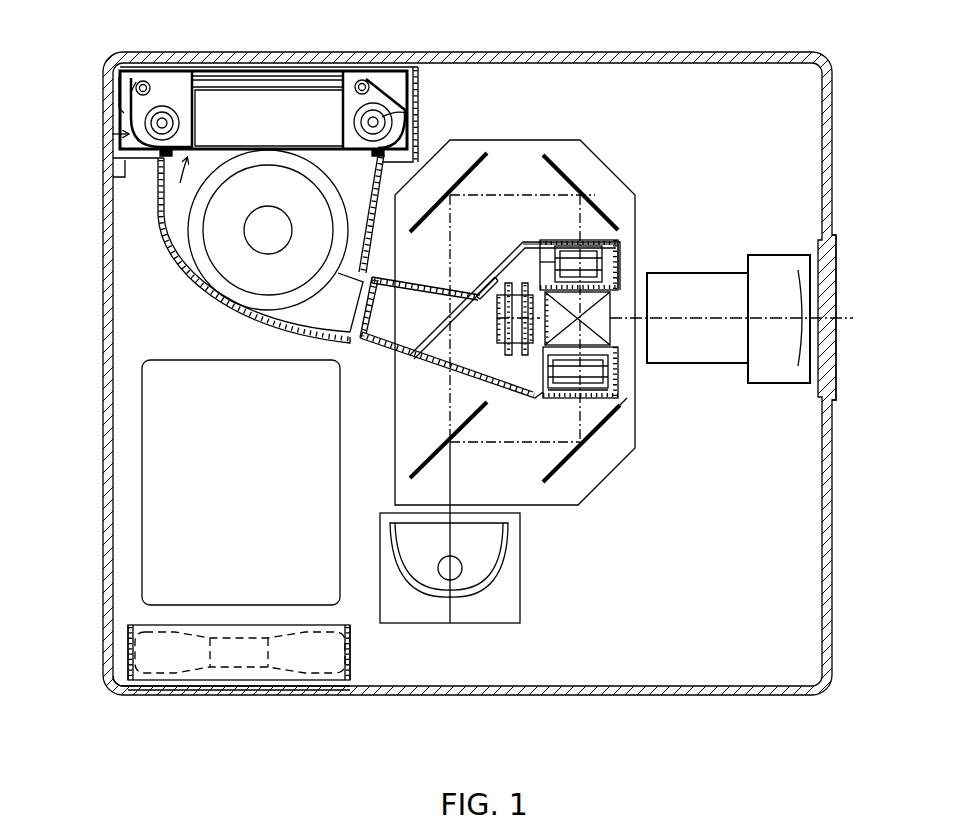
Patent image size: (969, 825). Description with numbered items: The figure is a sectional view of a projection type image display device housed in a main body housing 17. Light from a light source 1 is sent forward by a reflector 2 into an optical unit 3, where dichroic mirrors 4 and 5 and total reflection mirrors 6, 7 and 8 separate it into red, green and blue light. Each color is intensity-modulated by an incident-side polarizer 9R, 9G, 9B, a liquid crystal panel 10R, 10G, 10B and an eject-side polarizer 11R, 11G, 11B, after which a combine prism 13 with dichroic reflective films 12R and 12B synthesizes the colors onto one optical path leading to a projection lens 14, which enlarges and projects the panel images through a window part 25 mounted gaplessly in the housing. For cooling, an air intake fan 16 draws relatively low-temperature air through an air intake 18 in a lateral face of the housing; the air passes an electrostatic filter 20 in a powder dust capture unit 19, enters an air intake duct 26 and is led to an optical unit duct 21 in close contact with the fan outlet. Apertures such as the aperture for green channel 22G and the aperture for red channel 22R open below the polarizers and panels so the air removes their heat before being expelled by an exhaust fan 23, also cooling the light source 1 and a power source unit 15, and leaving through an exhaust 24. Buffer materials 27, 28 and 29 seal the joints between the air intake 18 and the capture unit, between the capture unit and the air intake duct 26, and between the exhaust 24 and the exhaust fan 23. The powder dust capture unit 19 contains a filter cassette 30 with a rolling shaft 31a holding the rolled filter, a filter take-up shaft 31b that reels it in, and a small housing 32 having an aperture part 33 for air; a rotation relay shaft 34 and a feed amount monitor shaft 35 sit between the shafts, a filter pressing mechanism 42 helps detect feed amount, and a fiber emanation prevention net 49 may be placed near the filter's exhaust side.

The light source 1 is at (462, 565).
The reflector 2 is at (495, 590).
The optical unit 3 is at (594, 502).
The dichroic mirror 4 is at (437, 447).
The dichroic mirror 5 is at (420, 338).
The total reflection mirror 6 is at (585, 466).
The total reflection mirror 7 is at (490, 150).
The total reflection mirror 8 is at (545, 152).
The incident-side polarizer 9R is at (612, 228).
The incident-side polarizer 9G is at (518, 356).
The incident-side polarizer 9B is at (621, 408).
The liquid crystal panel 10R is at (560, 246).
The liquid crystal panel 10G is at (484, 283).
The liquid crystal panel 10B is at (605, 392).
The eject-side polarizer 11R is at (540, 262).
The eject-side polarizer 11G is at (505, 290).
The eject-side polarizer 11B is at (546, 396).
The dichroic reflective film 12R is at (615, 350).
The dichroic reflective film 12B is at (625, 290).
The combine prism 13 is at (605, 305).
The projection lens 14 is at (778, 260).
The power source unit 15 is at (175, 462).
The air intake fan 16 is at (205, 233).
The main body housing 17 is at (103, 323).
The air intake 18 is at (303, 78).
The powder dust capture unit 19 is at (178, 186).
The electrostatic filter 20 is at (272, 76).
The optical unit duct 21 is at (368, 340).
The aperture for green channel 22G is at (497, 335).
The aperture for red channel 22R is at (622, 248).
The exhaust fan 23 is at (178, 668).
The exhaust 24 is at (252, 694).
The window part 25 is at (838, 282).
The air intake duct 26 is at (172, 270).
The buffer material 27 is at (195, 72).
The buffer material 28 is at (118, 170).
The buffer material 29 is at (125, 682).
The filter cassette 30 is at (122, 131).
The rolling shaft 31a is at (382, 117).
The filter take-up shaft 31b is at (128, 140).
The small housing 32 is at (418, 92).
The aperture part 33 is at (232, 72).
The rotation relay shaft 34 is at (368, 72).
The feed amount monitor shaft 35 is at (155, 72).
The filter pressing mechanism 42 is at (118, 82).
The fiber emanation prevention net 49 is at (318, 72).